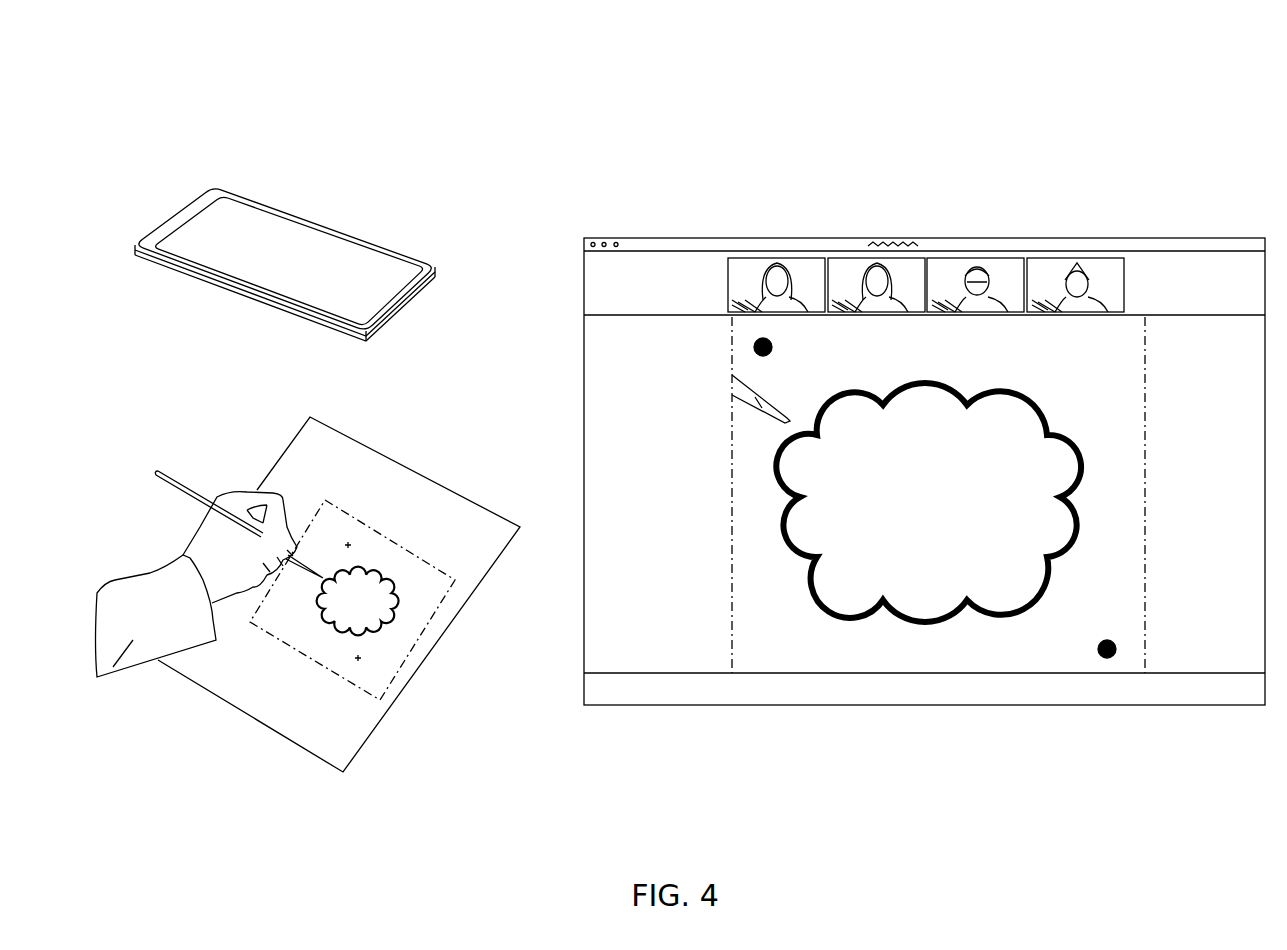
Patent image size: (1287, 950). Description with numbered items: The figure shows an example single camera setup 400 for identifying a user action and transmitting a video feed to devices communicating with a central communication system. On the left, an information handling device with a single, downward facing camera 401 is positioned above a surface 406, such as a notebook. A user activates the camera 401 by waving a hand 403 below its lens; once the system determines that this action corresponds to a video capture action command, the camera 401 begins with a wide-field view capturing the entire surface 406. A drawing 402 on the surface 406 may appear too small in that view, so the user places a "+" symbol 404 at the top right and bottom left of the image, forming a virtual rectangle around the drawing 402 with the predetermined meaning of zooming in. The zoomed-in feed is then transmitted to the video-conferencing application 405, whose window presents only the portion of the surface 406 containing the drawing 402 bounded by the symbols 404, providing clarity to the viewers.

The single camera setup 400 is at (132, 110).
The downward facing camera 401 is at (178, 288).
The drawing 402 is at (353, 585).
The hand 403 is at (173, 647).
The "+" symbol 404 is at (397, 680).
The application 405 is at (677, 237).
The surface 406 is at (308, 715).